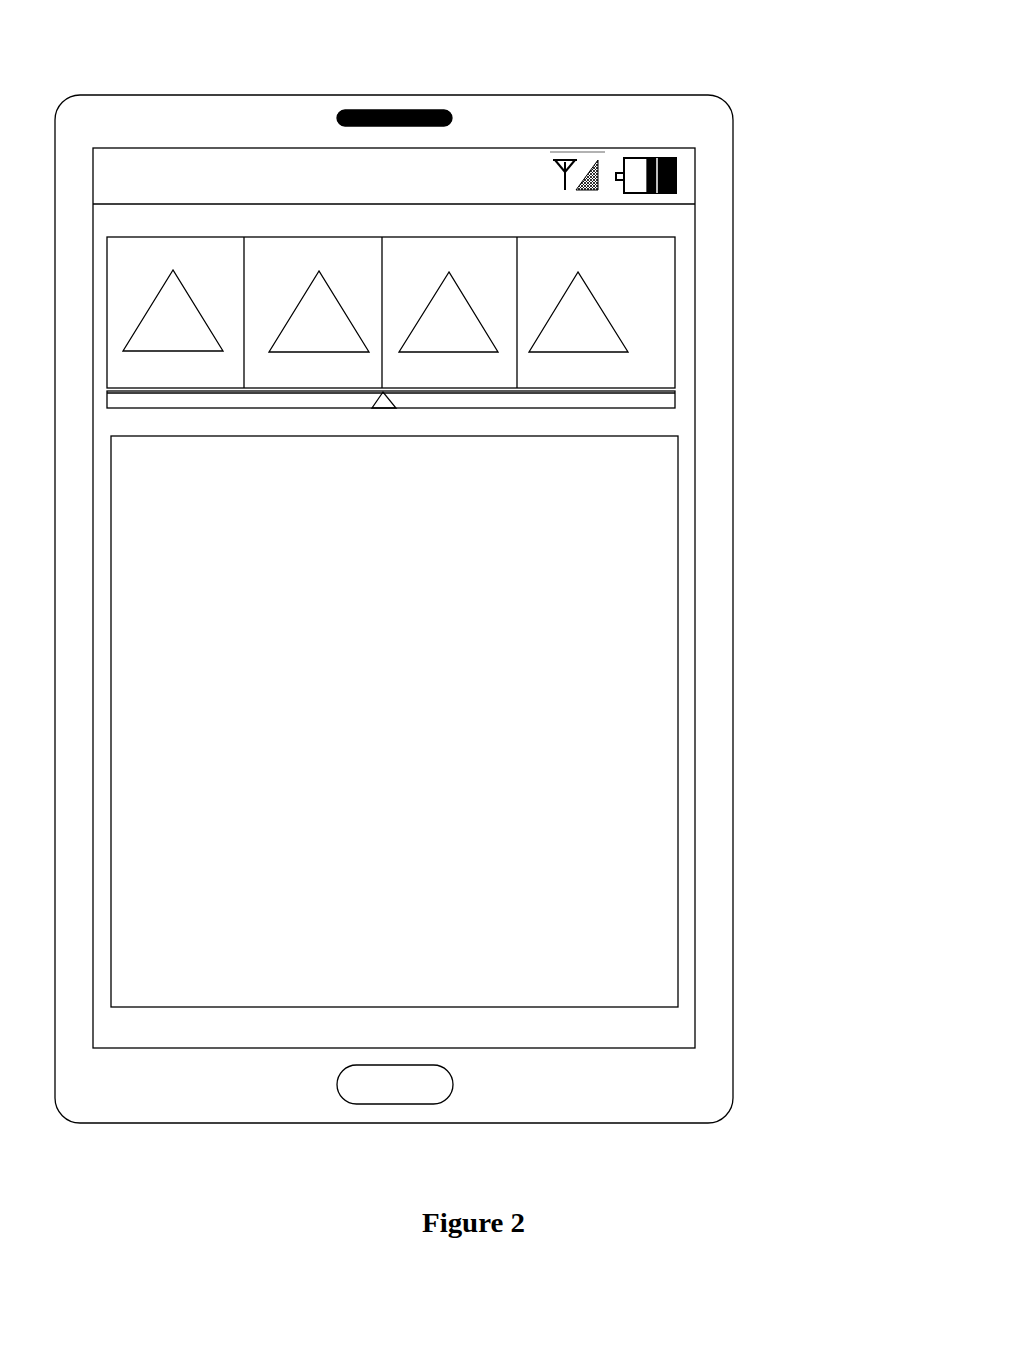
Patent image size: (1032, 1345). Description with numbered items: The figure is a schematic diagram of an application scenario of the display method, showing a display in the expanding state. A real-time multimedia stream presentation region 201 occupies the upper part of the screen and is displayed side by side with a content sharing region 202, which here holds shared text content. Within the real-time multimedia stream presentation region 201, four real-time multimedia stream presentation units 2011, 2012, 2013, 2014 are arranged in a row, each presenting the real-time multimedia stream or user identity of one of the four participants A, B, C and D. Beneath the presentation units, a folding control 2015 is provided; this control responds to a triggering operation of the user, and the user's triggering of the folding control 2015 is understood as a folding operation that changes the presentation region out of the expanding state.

The real-time multimedia stream presentation region 201 is at (675, 263).
The content sharing region 202 is at (663, 609).
The real-time multimedia stream presentation unit 2011 is at (204, 264).
The real-time multimedia stream presentation unit 2012 is at (353, 264).
The real-time multimedia stream presentation unit 2013 is at (474, 250).
The real-time multimedia stream presentation unit 2014 is at (623, 250).
The folding control 2015 is at (392, 400).